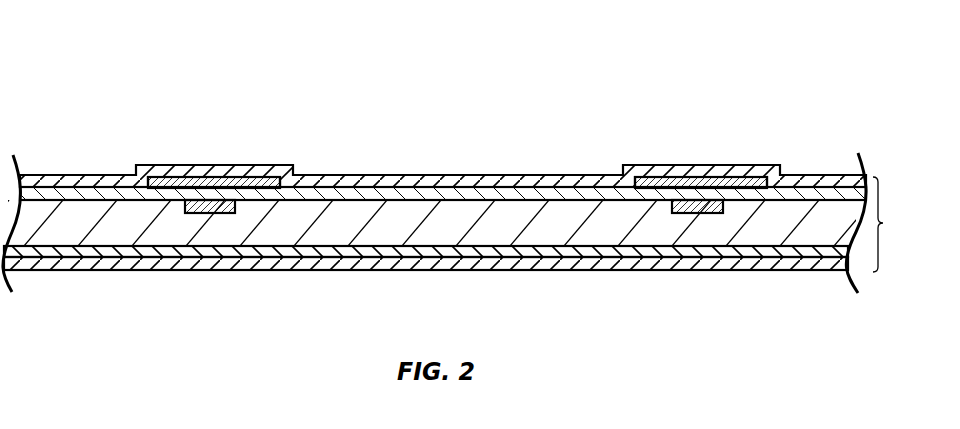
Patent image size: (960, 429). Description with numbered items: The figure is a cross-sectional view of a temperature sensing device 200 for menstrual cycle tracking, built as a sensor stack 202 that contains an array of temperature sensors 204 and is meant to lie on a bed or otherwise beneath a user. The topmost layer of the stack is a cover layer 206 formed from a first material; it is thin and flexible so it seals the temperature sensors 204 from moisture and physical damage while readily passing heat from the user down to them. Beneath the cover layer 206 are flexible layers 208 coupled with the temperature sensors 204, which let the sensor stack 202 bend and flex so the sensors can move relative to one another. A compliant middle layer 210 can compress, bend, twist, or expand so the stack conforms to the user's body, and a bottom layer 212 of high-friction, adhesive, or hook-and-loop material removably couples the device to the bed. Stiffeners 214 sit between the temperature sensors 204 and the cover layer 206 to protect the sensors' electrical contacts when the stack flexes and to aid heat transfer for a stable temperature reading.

The temperature sensing device 200 is at (55, 58).
The sensor stack 202 is at (895, 224).
The temperature sensors 204 is at (227, 201).
The cover layer 206 is at (473, 177).
The flexible layers 208 is at (360, 187).
The compliant middle layer 210 is at (145, 248).
The bottom layer 212 is at (507, 272).
The stiffeners 214 is at (171, 177).